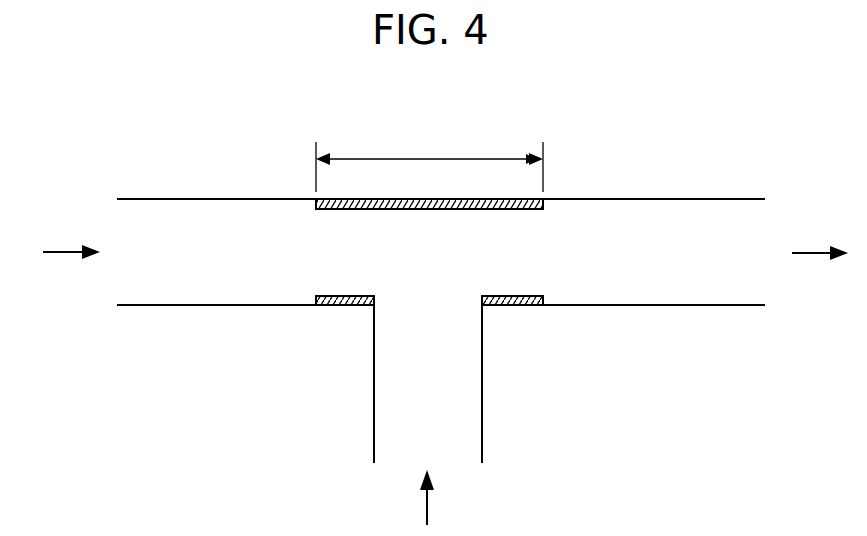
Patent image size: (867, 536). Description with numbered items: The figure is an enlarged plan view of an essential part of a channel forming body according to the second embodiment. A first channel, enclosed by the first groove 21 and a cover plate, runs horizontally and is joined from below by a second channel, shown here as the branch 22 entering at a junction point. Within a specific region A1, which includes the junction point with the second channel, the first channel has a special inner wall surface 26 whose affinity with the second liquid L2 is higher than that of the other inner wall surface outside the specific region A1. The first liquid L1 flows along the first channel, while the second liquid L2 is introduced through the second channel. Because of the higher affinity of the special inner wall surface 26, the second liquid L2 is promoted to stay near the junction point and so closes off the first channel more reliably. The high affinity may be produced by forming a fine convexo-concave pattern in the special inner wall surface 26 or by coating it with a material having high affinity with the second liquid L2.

The first groove 21 is at (643, 218).
The branch waveguide 22 is at (385, 387).
The special inner wall surface 26 is at (425, 210).
The specific region A1 is at (429, 159).
The light L1 is at (60, 252).
The second liquid L2 is at (429, 503).